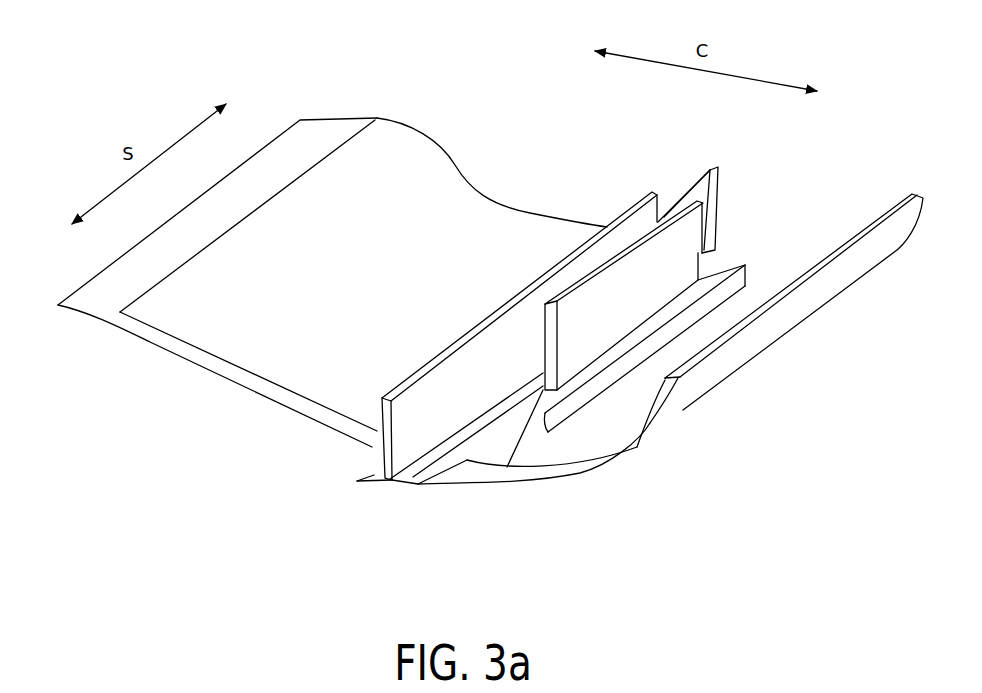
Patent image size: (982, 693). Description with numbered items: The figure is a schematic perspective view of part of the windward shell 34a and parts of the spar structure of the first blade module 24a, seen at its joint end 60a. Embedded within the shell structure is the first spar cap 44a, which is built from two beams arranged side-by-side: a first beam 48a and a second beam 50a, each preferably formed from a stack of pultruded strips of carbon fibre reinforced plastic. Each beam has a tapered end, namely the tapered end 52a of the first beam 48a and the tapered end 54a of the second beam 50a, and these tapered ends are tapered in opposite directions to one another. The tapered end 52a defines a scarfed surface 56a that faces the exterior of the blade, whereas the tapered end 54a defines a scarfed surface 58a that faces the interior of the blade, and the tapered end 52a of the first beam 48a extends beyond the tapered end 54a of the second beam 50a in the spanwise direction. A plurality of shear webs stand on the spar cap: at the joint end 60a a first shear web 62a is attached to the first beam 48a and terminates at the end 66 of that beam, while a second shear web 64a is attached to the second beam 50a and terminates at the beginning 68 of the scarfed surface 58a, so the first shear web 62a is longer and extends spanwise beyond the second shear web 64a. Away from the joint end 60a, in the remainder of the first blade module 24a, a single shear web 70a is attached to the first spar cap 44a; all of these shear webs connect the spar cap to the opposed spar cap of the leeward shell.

The first blade module 24a is at (268, 93).
The windward shell 34a is at (193, 327).
The joint end 60a is at (272, 437).
The first shear web 62a is at (490, 307).
The second shear web 64a is at (655, 265).
The beginning of the scarfed surface 68 is at (550, 310).
The single shear web 70a is at (710, 187).
The second beam 50a is at (727, 253).
The first spar cap 44a is at (603, 410).
The tapered end of the second beam 54a is at (551, 435).
The scarfed surface of the second beam 58a is at (526, 425).
The first beam 48a is at (458, 453).
The tapered end of the first beam 52a is at (442, 487).
The scarfed surface of the first beam 56a is at (420, 480).
The end of the first beam 66 is at (365, 482).